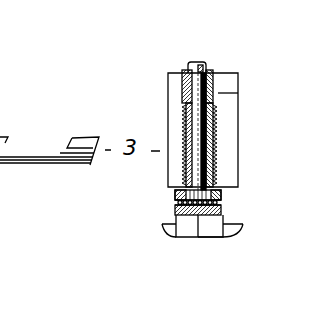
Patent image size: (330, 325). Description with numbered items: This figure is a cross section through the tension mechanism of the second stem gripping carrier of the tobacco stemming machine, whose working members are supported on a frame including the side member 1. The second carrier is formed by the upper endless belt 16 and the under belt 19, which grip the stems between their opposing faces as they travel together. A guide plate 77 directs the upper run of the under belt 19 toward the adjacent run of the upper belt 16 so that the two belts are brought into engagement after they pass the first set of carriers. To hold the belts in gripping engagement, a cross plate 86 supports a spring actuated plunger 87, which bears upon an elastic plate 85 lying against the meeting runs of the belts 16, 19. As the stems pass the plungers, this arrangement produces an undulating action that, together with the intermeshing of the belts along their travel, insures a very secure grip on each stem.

The side member 1 is at (48, 153).
The cross plate 86 is at (218, 93).
The spring actuated plunger 87 is at (208, 72).
The elastic plate 85 is at (222, 196).
The under belt 19 is at (222, 204).
The upper endless belt 16 is at (190, 220).
The guide plate 77 is at (200, 235).